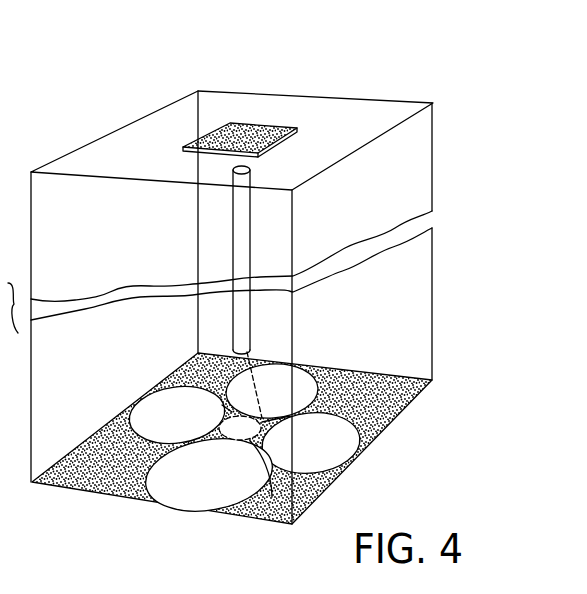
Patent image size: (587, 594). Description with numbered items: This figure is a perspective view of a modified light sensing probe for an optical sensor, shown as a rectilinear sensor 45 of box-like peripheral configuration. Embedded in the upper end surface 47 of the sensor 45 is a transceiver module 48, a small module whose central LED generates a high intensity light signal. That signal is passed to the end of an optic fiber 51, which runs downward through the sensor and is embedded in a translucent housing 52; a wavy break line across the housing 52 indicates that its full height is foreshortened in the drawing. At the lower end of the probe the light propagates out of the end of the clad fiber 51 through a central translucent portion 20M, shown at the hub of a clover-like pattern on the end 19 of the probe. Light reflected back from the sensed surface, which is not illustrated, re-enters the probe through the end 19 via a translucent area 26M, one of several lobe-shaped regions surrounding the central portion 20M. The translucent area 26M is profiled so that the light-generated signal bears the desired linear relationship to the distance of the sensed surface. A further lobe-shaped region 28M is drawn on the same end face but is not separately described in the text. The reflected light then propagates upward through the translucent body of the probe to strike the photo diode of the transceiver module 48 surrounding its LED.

The sensor 45 is at (257, 76).
The upper end surface 47 is at (341, 140).
The transceiver module 48 is at (268, 128).
The optic fiber 51 is at (235, 270).
The translucent housing 52 is at (412, 283).
The end 19 is at (395, 421).
The translucent area 26M is at (340, 448).
The blade 28M is at (322, 497).
The central translucent portion 20M is at (253, 441).